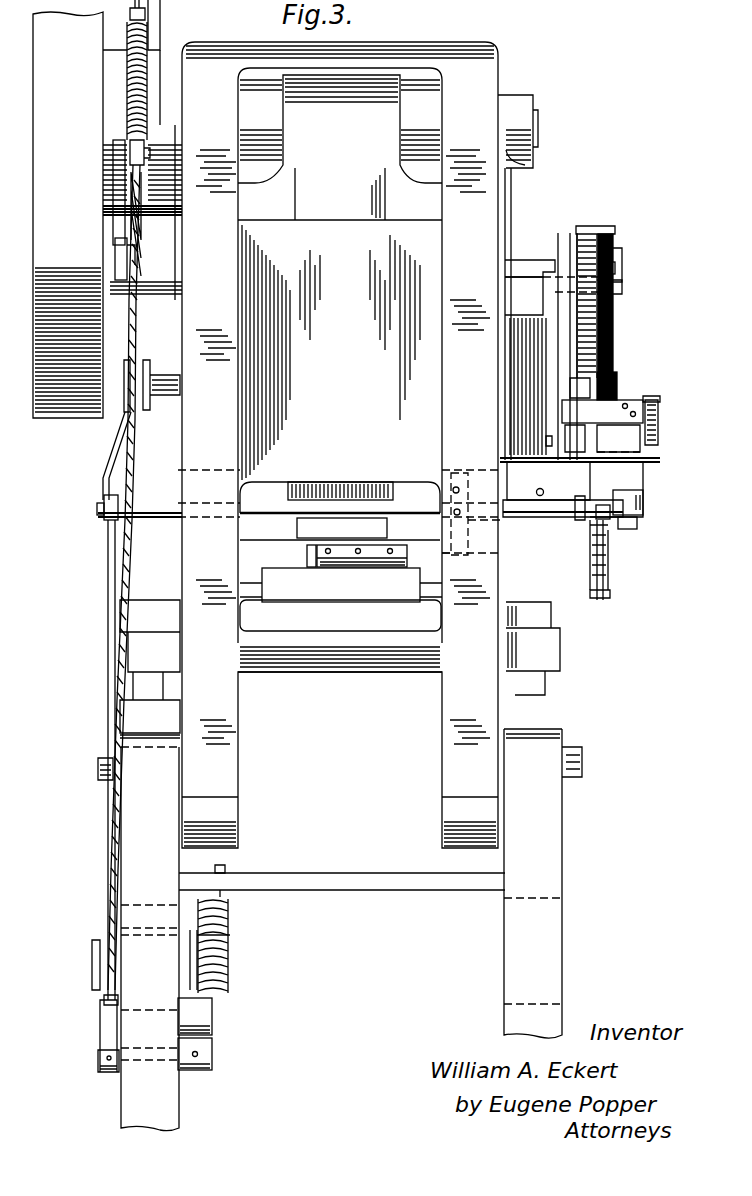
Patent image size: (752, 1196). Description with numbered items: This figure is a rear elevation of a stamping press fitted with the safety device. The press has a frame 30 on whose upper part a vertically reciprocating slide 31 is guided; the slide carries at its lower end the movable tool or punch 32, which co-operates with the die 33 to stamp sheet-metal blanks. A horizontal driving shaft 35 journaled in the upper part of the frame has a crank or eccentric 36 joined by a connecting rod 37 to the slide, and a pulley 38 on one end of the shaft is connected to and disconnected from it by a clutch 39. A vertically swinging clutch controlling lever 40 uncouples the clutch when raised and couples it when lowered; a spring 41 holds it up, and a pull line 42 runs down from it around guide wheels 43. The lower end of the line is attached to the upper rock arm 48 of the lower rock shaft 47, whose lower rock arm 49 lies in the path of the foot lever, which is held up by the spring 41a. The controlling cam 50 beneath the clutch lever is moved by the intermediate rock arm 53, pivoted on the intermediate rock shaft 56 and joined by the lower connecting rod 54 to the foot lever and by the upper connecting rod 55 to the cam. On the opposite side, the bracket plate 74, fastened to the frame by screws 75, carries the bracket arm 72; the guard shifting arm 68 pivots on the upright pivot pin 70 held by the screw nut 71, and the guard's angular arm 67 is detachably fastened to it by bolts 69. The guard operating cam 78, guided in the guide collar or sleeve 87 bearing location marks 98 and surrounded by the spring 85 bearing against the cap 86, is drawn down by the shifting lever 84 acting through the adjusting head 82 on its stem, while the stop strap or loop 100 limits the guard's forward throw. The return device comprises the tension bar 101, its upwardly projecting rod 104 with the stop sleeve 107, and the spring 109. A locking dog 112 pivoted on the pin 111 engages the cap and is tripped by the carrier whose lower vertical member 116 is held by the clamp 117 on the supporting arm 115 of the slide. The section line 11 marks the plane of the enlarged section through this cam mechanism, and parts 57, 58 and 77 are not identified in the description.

The section line 11— 11 is at (603, 228).
The frame 30 is at (351, 930).
The vertically reciprocating slide 31 is at (333, 482).
The movable tool or punch 32 is at (342, 530).
The die 33 is at (285, 575).
The horizontal driving shaft 35 is at (534, 127).
The crank or eccentric 36 is at (283, 112).
The connecting rod 37 is at (340, 185).
The pulley 38 is at (68, 215).
The clutch 39 is at (143, 187).
The clutch controlling lever 40 is at (113, 217).
The spring 41 is at (148, 62).
The spring 41a is at (229, 947).
The pull line 42 is at (137, 577).
The guide wheels 43 is at (92, 968).
The lower horizontal rock shaft 47 is at (212, 1057).
The upper rock arm 48 is at (100, 1033).
The lower rock arm 49 is at (212, 1029).
The controlling cam 50 is at (115, 247).
The intermediate rock arm 53 is at (104, 505).
The lower connecting rod 54 is at (108, 605).
The upper connecting rod 55 is at (108, 453).
The intermediate rock shaft 56 is at (340, 534).
The strip 57 is at (384, 562).
The stop 58 is at (307, 556).
The angular arm 67 is at (463, 554).
The guard shifting arm 68 is at (633, 495).
The bolts 69 is at (475, 514).
The upright pivot pin 70 is at (632, 530).
The screw nut 71 is at (640, 521).
The bracket arm 72 is at (628, 442).
The bracket plate 74 is at (558, 251).
The screws 75 is at (546, 442).
The plate 77 is at (648, 463).
The guard operating cam 78 is at (613, 367).
The adjusting head 82 is at (610, 593).
The shifting lever 84 is at (592, 572).
The spring 85 is at (600, 333).
The cap 86 is at (622, 290).
The guide collar or sleeve 87 is at (573, 393).
The location marks 98 is at (618, 391).
The stop strap or loop 100 is at (575, 484).
The tension bar 101 is at (580, 524).
The upwardly projecting rod 104 is at (658, 435).
The stop sleeve 107 is at (578, 411).
The spring 109 is at (660, 411).
The pin 111 is at (615, 236).
The locking dog 112 is at (585, 300).
The supporting arm 115 is at (520, 276).
The lower vertical member 116 is at (622, 264).
The clamp 117 is at (618, 271).